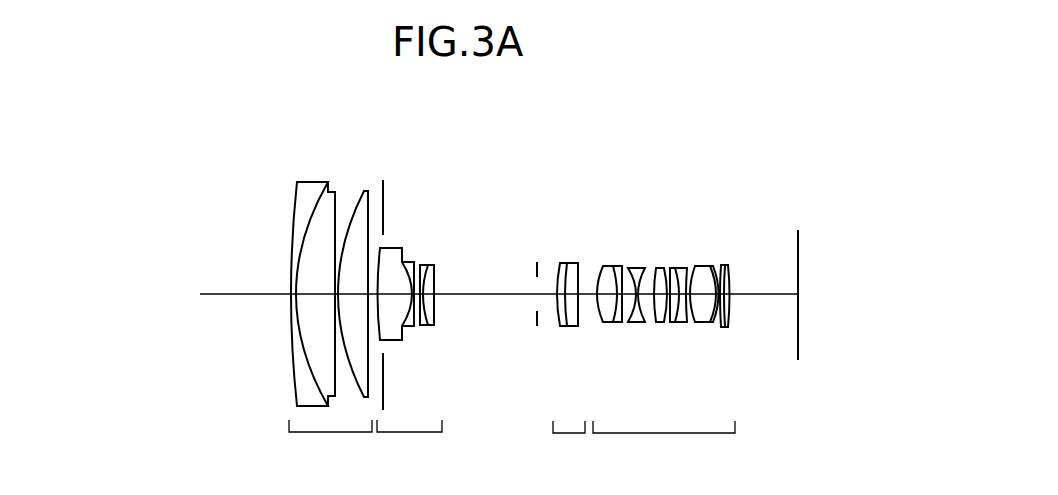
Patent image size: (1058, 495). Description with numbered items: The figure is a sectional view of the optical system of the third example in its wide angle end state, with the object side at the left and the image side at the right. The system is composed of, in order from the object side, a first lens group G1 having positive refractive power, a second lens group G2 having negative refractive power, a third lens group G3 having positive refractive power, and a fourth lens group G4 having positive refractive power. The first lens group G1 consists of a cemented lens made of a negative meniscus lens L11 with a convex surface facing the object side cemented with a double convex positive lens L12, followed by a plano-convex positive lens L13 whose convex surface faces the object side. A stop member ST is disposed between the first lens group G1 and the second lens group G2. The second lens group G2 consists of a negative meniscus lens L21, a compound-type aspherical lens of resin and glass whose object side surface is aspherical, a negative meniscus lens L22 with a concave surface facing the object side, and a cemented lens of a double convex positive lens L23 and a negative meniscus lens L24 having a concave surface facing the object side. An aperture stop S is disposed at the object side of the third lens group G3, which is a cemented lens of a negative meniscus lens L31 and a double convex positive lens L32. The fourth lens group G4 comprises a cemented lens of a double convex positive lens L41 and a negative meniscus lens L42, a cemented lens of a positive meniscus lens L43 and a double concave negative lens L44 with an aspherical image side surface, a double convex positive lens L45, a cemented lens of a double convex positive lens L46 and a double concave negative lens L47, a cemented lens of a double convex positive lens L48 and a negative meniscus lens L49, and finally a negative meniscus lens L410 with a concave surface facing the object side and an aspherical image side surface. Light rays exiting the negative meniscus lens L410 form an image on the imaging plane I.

The negative meniscus lens L11 is at (298, 181).
The double convex positive lens L12 is at (329, 190).
The plano-convex positive lens L13 is at (366, 190).
The stop member ST is at (383, 180).
The negative meniscus lens L21 is at (387, 247).
The negative meniscus lens L22 is at (410, 262).
The double convex positive lens L23 is at (429, 264).
The negative meniscus lens L24 is at (436, 264).
The aperture stop S is at (534, 262).
The negative meniscus lens L31 is at (561, 264).
The double convex positive lens L32 is at (570, 264).
The double convex positive lens L41 is at (603, 265).
The negative meniscus lens L42 is at (615, 265).
The positive meniscus lens L43 is at (632, 267).
The double concave negative lens L44 is at (641, 267).
The double convex positive lens L45 is at (672, 267).
The double convex positive lens L46 is at (682, 267).
The double concave negative lens L47 is at (696, 265).
The double convex positive lens L48 is at (711, 265).
The negative meniscus lens L49 is at (722, 264).
The negative meniscus lens L410 is at (729, 264).
The imaging plane I is at (800, 232).
The first lens group G1 is at (330, 441).
The second lens group G2 is at (409, 441).
The third lens group G3 is at (569, 441).
The fourth lens group G4 is at (664, 441).